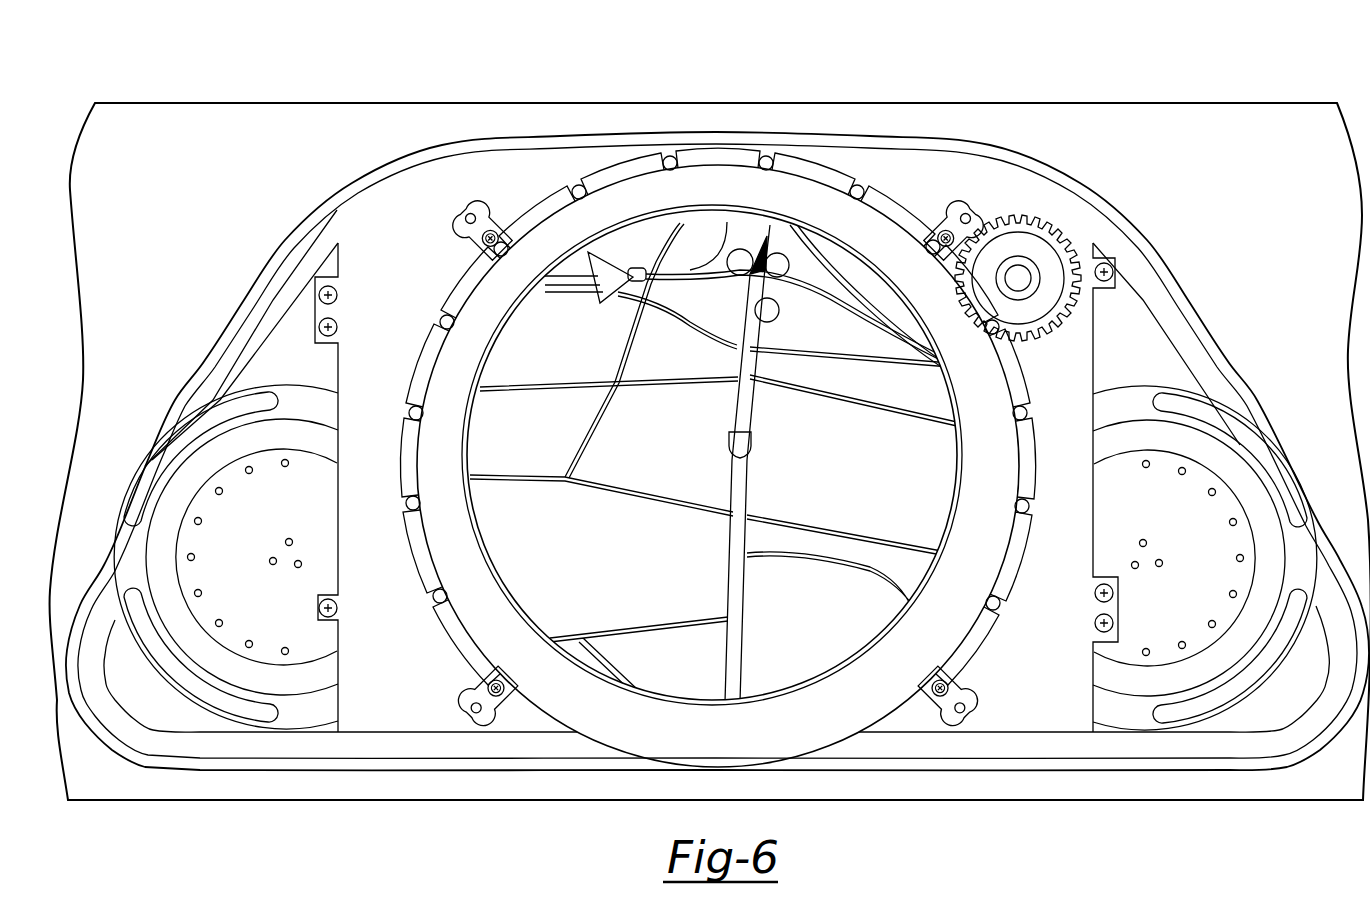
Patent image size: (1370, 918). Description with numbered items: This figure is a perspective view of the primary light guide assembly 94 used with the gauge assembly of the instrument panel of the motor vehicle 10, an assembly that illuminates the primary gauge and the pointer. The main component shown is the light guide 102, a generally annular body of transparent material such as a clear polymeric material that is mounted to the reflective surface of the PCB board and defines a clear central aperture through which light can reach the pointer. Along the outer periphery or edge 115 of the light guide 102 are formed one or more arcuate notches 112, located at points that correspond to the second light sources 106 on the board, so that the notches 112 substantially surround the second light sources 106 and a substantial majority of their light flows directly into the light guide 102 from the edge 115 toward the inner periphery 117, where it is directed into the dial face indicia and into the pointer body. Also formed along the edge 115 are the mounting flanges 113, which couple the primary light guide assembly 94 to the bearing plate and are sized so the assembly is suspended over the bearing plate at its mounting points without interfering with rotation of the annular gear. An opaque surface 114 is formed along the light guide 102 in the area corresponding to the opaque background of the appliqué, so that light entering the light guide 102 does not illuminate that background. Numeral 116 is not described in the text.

The motor vehicle 10 is at (455, 90).
The primary light guide assembly 94 is at (960, 196).
The light guide 102 is at (822, 168).
The second light sources 106 is at (1024, 503).
The arcuate notches 112 is at (440, 595).
The mounting flanges 113 is at (477, 244).
The opaque surface 114 is at (573, 700).
The outer periphery or edge 115 is at (828, 717).
The bezel retaining segment 116 is at (516, 210).
The inner periphery 117 is at (470, 466).